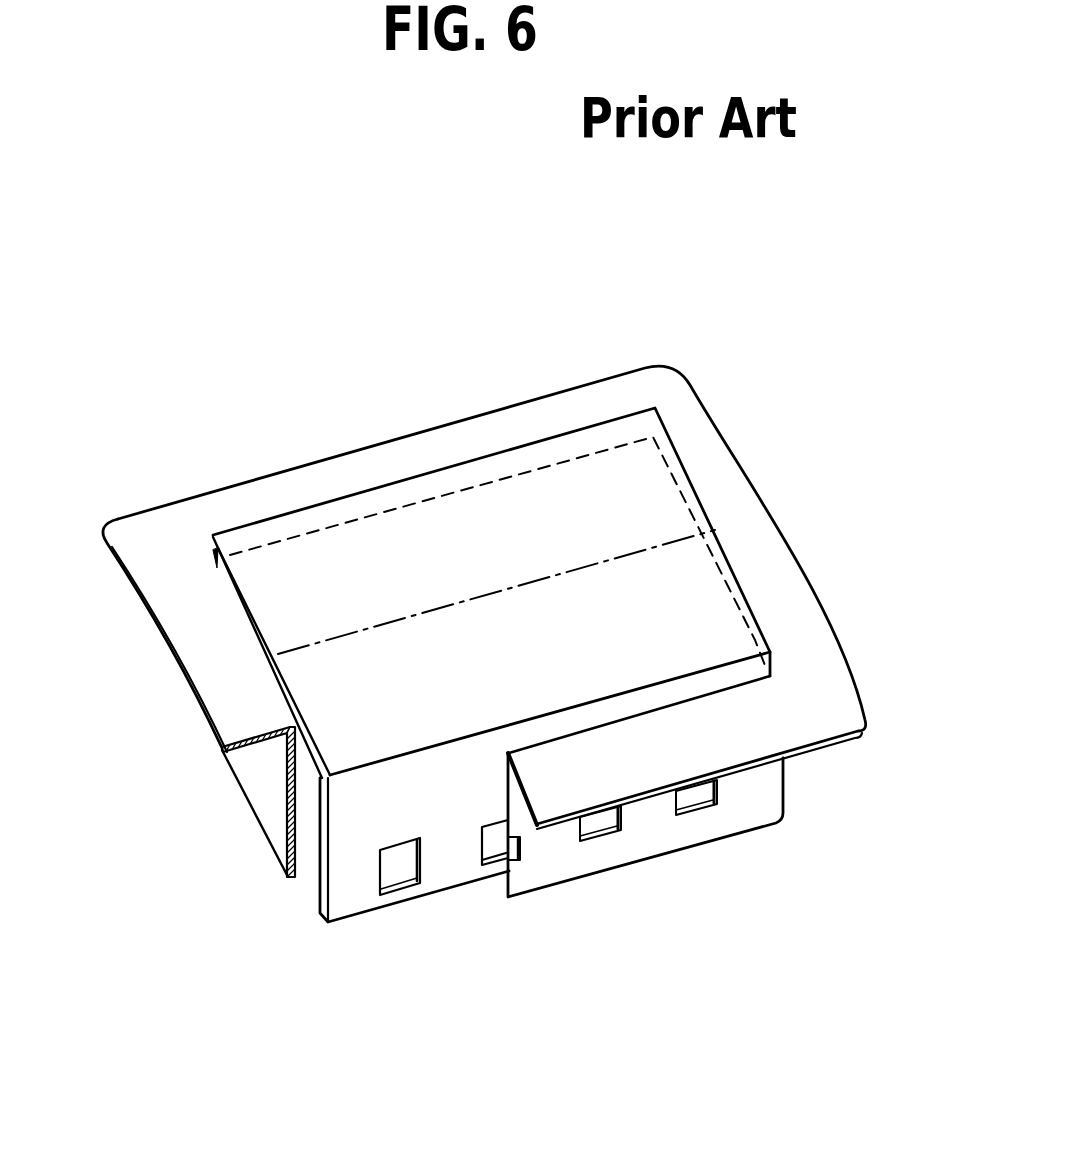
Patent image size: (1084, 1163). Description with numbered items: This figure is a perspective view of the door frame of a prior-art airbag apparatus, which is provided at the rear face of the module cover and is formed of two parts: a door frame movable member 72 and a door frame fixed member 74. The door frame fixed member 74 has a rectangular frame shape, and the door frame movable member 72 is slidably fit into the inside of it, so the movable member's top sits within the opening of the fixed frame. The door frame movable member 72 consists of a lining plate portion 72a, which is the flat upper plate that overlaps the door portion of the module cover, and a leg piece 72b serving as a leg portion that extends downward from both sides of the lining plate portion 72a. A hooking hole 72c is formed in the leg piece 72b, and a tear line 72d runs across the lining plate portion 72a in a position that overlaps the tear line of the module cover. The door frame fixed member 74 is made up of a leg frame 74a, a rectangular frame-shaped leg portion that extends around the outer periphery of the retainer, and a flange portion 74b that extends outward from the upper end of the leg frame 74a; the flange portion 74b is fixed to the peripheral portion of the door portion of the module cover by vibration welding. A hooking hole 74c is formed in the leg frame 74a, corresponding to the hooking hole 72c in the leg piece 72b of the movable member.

The door frame movable member 72 is at (635, 497).
The lining plate portion 72a is at (425, 578).
The leg piece 72b is at (348, 893).
The hooking hole 72c is at (398, 870).
The tear line 72d is at (547, 577).
The door frame fixed member 74 is at (798, 523).
The leg frame 74a is at (257, 768).
The flange portion 74b is at (790, 578).
The hooking hole 74c is at (607, 838).